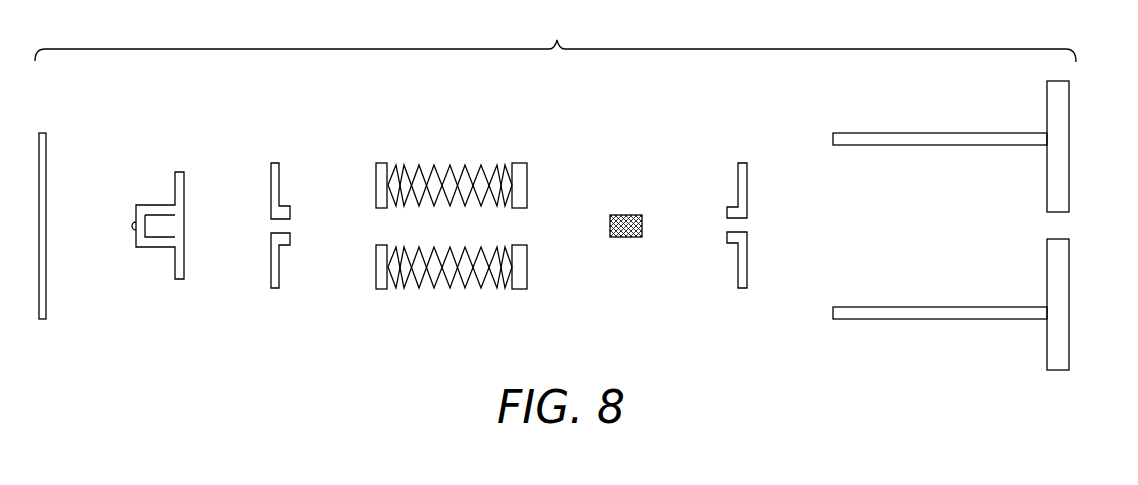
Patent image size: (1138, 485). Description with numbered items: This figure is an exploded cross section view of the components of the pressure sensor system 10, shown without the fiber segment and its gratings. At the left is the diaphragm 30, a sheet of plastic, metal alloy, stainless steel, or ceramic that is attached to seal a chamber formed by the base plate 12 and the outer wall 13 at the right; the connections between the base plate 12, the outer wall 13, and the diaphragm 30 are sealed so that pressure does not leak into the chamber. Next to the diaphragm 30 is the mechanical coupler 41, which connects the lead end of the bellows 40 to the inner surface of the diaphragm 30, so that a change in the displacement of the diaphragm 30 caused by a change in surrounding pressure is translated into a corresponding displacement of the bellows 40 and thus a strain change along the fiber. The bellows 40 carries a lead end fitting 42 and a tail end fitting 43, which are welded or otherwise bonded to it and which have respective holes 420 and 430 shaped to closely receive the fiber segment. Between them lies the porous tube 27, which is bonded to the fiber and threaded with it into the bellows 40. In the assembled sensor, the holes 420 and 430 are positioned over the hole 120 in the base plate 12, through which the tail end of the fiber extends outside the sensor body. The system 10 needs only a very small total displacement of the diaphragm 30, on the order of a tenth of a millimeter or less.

The system 10 is at (555, 40).
The diaphragm 30 is at (46, 173).
The mechanical coupler 41 is at (181, 187).
The lead end fitting 42 is at (276, 185).
The hole 420 is at (292, 226).
The bellows 40 is at (455, 183).
The porous tube 27 is at (628, 218).
The tail end fitting 43 is at (743, 203).
The hole 430 is at (750, 224).
The outer wall 13 is at (926, 138).
The base plate 12 is at (1061, 172).
The hole 120 is at (1043, 225).